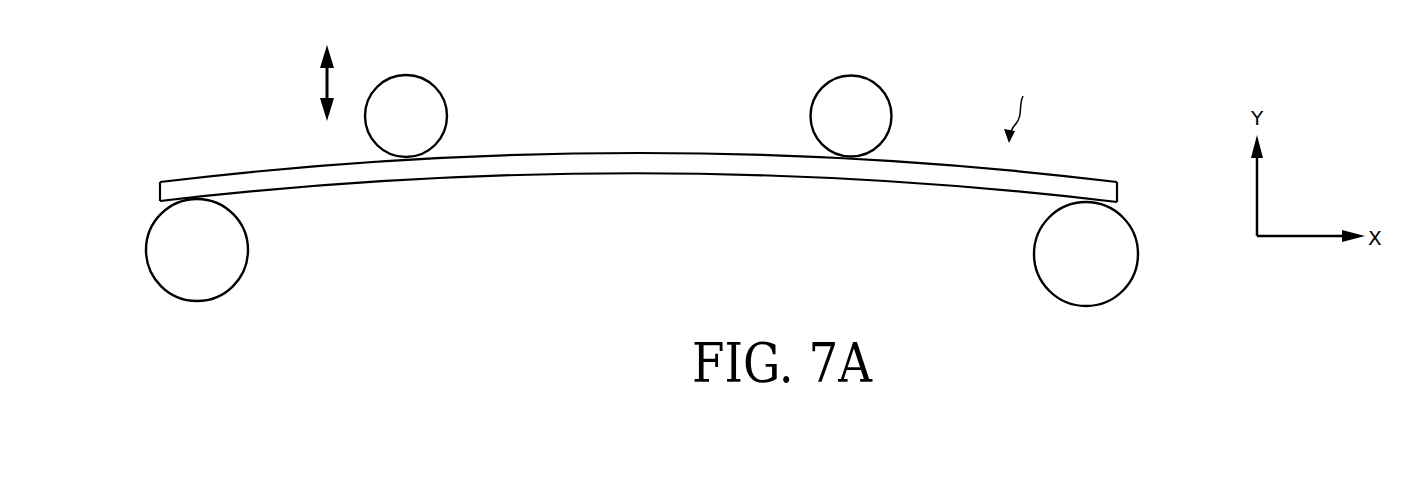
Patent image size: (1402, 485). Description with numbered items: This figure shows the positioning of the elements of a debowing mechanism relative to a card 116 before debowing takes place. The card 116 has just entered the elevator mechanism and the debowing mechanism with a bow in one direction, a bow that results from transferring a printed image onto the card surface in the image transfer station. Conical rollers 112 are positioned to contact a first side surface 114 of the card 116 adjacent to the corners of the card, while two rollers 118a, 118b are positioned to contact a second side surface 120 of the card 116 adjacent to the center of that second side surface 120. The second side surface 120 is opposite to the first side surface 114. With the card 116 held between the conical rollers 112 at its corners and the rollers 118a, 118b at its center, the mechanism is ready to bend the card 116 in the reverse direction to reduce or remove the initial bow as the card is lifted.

The conical rollers 112 is at (147, 249).
The first side surface 114 is at (590, 177).
The card 116 is at (1020, 106).
The roller 118a is at (851, 76).
The roller 118b is at (405, 76).
The second side surface 120 is at (578, 153).